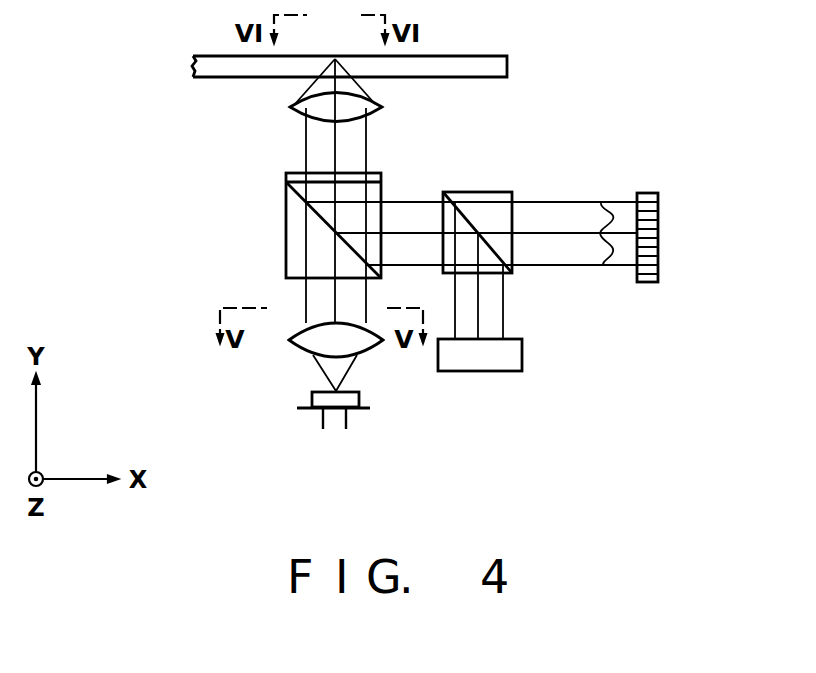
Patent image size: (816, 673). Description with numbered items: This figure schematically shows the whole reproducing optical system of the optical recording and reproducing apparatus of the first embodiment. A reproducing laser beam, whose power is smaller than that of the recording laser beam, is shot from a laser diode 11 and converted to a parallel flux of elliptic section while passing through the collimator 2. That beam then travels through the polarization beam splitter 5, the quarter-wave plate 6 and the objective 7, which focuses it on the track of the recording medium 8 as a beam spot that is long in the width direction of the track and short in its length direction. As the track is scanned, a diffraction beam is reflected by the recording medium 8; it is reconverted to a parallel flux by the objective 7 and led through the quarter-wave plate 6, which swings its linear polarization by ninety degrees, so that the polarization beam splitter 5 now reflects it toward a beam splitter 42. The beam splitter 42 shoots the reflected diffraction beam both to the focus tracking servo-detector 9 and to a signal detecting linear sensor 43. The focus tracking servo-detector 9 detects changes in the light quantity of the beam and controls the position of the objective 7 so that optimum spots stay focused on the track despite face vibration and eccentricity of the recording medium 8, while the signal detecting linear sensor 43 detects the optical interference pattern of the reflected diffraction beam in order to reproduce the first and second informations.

The collimator 2 is at (300, 346).
The polarization beam splitter 5 is at (286, 229).
The quarter-wave plate 6 is at (287, 176).
The objective 7 is at (291, 107).
The recording medium 8 is at (507, 57).
The focus tracking servo-detector 9 is at (496, 372).
The laser diode 11 is at (312, 397).
The beam splitter 42 is at (492, 192).
The signal detecting linear sensor 43 is at (660, 238).